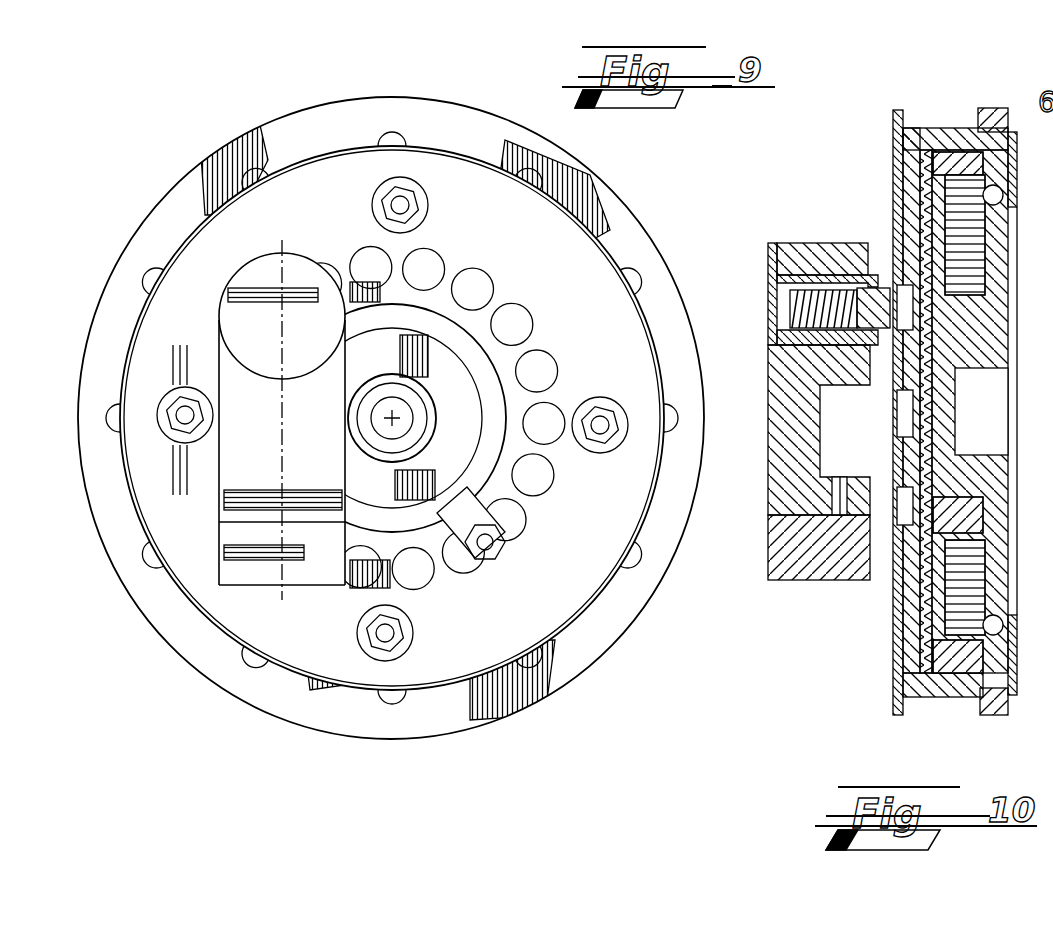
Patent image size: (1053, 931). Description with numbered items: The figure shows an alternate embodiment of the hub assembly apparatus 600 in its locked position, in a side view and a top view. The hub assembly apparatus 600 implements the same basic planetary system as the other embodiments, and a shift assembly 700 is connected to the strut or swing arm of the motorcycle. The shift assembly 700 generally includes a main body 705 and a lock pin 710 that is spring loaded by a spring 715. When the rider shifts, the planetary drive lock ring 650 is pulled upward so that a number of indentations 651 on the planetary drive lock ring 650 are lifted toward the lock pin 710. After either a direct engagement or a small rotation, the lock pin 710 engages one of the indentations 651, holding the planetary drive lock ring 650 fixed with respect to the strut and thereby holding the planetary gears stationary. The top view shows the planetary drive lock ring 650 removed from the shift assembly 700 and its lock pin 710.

In FIG. 9, the hub assembly apparatus 600 is at (210, 165).
In FIG. 10, the hub assembly apparatus 600 is at (918, 375).
In FIG. 10, the planetary drive lock ring 650 is at (893, 182).
In FIG. 10, the indentations 651 is at (907, 500).
In FIG. 9, the shift assembly 700 is at (243, 385).
In FIG. 10, the shift assembly 700 is at (774, 380).
In FIG. 9, the main body 705 is at (733, 478).
In FIG. 10, the main body 705 is at (819, 462).
In FIG. 10, the lock pin 710 is at (888, 287).
In FIG. 10, the spring 715 is at (777, 320).